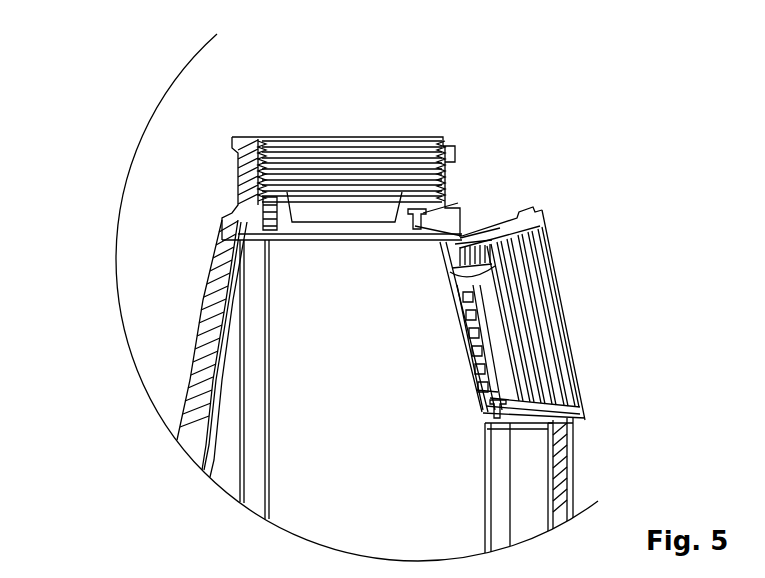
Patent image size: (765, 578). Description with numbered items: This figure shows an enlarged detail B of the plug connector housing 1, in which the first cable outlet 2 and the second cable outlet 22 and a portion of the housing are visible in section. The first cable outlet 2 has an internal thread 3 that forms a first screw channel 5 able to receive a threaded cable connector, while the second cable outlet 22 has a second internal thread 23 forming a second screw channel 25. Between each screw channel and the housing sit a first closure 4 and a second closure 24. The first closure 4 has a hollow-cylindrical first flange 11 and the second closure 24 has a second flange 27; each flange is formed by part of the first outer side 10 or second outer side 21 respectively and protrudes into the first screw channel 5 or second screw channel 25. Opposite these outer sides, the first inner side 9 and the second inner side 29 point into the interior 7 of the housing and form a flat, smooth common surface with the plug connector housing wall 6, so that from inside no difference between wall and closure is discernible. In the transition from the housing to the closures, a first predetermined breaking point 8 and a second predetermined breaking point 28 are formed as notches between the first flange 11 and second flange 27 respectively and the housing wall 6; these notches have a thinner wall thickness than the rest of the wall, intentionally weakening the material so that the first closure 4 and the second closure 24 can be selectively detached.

The plug connector housing 1 is at (192, 263).
The first cable outlet 2 is at (238, 152).
The internal thread 3 is at (402, 138).
The first closure 4 is at (312, 245).
The first screw channel 5 is at (350, 128).
The plug connector housing wall 6 is at (203, 350).
The interior 7 is at (302, 500).
The first predetermined breaking point 8 is at (265, 243).
The first inner side 9 is at (339, 245).
The first outer side 10 is at (343, 217).
The first flange 11 is at (444, 149).
The second outer side 21 is at (478, 328).
The second cable outlet 22 is at (535, 210).
The second internal thread 23 is at (567, 370).
The second closure 24 is at (476, 390).
The second screw channel 25 is at (568, 303).
The second flange 27 is at (448, 288).
The second predetermined breaking point 28 is at (460, 243).
The second inner side 29 is at (458, 354).
The detail B is at (148, 418).